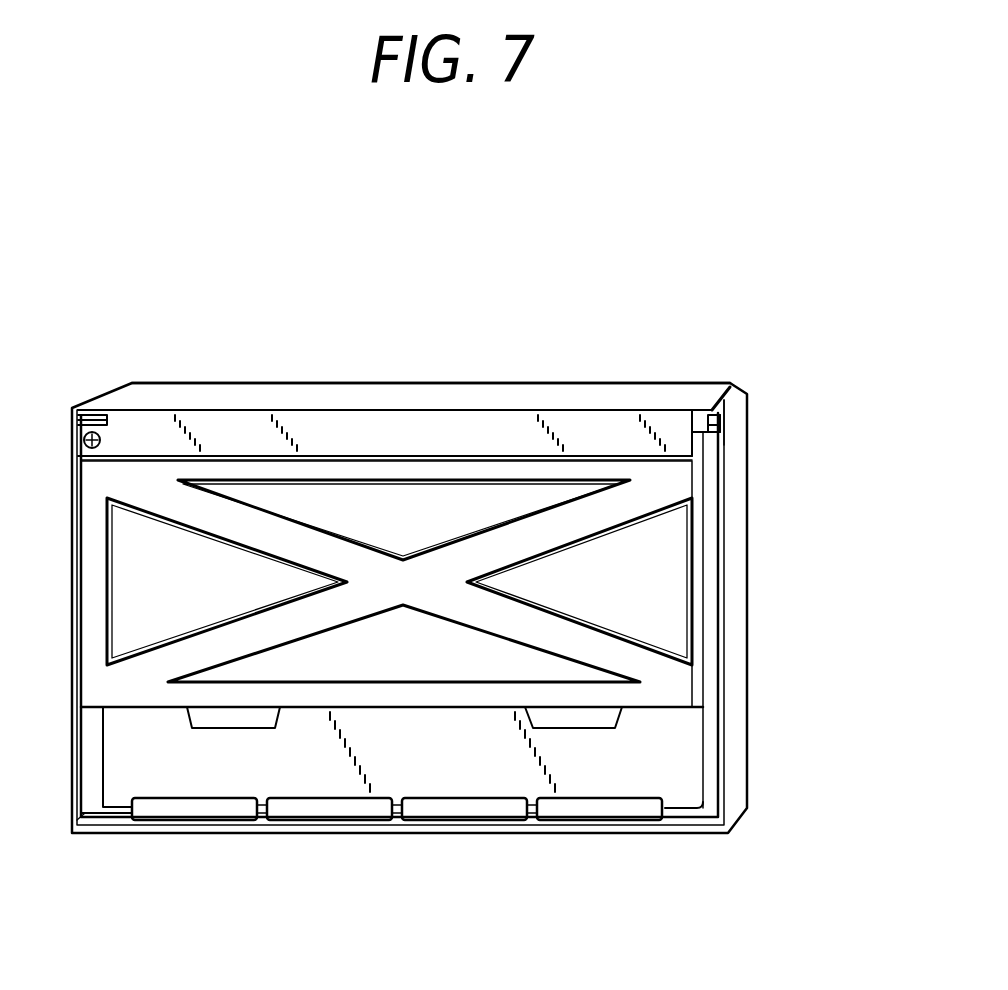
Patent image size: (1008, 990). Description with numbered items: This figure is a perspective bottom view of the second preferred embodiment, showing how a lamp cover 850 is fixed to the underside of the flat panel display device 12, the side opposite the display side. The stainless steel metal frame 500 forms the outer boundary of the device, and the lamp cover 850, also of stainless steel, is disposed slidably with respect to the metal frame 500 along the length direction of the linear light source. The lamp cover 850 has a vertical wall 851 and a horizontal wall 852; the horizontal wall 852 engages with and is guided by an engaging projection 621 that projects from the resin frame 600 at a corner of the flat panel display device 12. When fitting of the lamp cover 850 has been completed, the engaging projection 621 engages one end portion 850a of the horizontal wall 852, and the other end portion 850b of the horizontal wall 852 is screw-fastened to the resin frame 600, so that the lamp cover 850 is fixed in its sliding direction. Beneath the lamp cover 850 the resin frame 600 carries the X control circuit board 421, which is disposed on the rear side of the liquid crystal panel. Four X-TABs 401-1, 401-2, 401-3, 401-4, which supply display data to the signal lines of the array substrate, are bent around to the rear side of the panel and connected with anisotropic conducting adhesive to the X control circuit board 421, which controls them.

The flat panel display device 12 is at (638, 268).
The metal frame 500 is at (747, 548).
The lamp cover 850 is at (512, 297).
The vertical wall 851 is at (365, 383).
The horizontal wall 852 is at (445, 430).
The one end portion 850a is at (708, 430).
The other end portion 850b is at (88, 428).
The engaging projection 621 is at (708, 445).
The resin frame 600 is at (665, 690).
The X control circuit board 421 is at (673, 762).
The X-TAB 401-1 is at (195, 808).
The X-TAB 401-2 is at (330, 808).
The X-TAB 401-3 is at (463, 808).
The X-TAB 401-4 is at (600, 808).